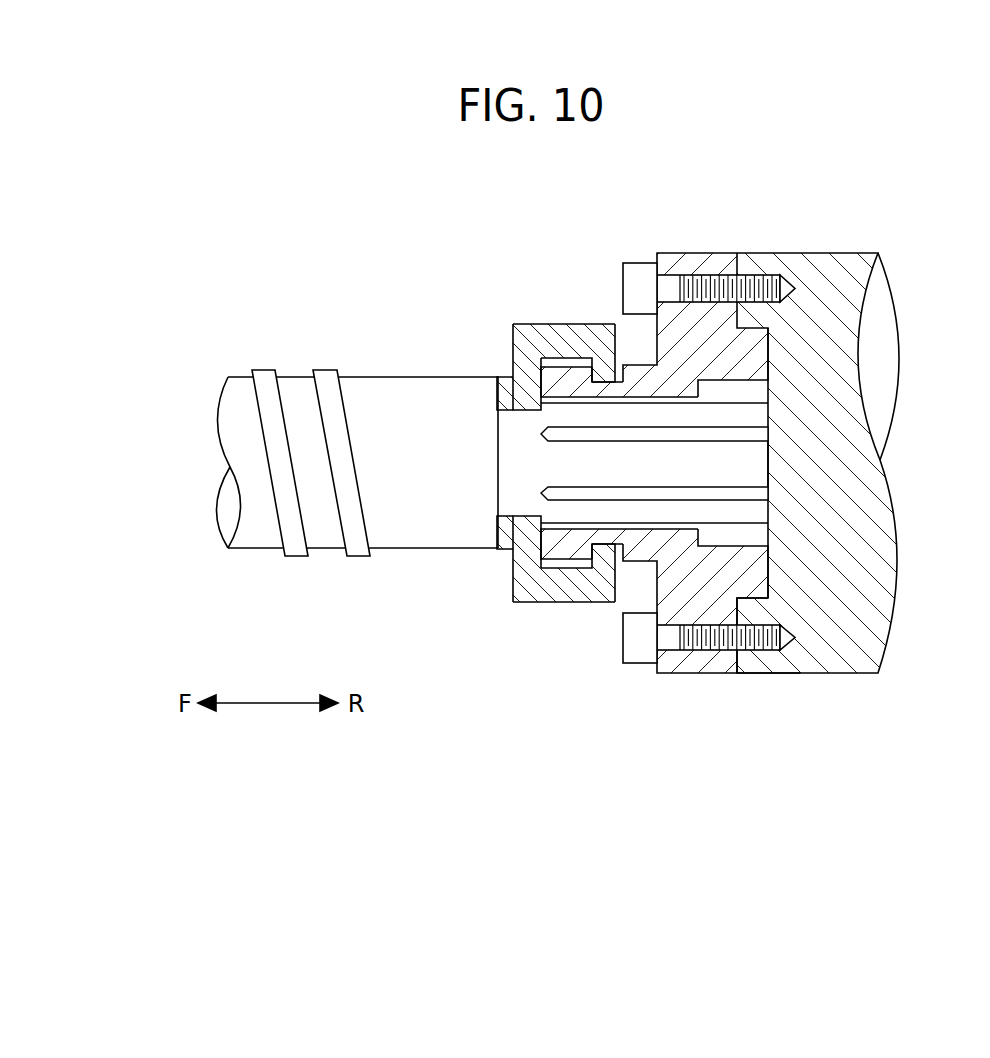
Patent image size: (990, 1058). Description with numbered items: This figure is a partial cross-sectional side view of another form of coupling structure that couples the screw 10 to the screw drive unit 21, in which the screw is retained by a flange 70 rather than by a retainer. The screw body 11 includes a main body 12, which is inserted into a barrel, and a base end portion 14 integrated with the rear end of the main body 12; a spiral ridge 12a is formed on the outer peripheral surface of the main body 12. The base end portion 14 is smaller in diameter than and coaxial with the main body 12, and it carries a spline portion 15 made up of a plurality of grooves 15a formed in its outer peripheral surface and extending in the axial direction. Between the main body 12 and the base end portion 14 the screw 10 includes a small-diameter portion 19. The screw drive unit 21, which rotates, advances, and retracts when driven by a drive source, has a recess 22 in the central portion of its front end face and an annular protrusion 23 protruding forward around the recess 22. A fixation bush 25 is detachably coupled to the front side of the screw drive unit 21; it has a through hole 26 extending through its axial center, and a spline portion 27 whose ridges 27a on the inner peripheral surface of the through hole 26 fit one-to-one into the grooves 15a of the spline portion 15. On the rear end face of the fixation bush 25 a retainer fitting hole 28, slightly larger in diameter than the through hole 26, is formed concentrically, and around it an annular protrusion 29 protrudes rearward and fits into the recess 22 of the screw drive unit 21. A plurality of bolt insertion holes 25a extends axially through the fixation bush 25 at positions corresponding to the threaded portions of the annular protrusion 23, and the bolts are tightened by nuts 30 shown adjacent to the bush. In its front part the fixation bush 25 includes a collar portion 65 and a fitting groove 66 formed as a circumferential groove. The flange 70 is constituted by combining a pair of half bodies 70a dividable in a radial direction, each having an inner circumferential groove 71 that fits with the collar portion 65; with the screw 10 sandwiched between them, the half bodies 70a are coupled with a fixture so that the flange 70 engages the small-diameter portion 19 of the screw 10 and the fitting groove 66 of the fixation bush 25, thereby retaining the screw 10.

The screw 10 is at (235, 369).
The screw body 11 is at (259, 549).
The main body 12 is at (366, 375).
The spiral ridge 12a is at (258, 368).
The base end portion 14 is at (730, 472).
The spline portion 15 is at (528, 463).
The grooves 15a is at (733, 433).
The small-diameter portion 19 is at (538, 408).
The screw drive unit 21 is at (810, 252).
The recess 22 is at (757, 570).
The annular protrusion 23 is at (738, 636).
The fixation bush 25 is at (705, 252).
The bolt insertion holes 25a is at (681, 275).
The through hole 26 is at (590, 527).
The spline portion 27 is at (659, 414).
The ridges 27a is at (575, 396).
The retainer fitting hole 28 is at (733, 543).
The annular protrusion 29 is at (770, 355).
The nut 30 is at (640, 262).
The collar portion 65 is at (566, 357).
The fitting groove 66 is at (610, 547).
The flange 70 is at (515, 312).
The half bodies 70a is at (545, 323).
The inner circumferential groove 71 is at (570, 567).